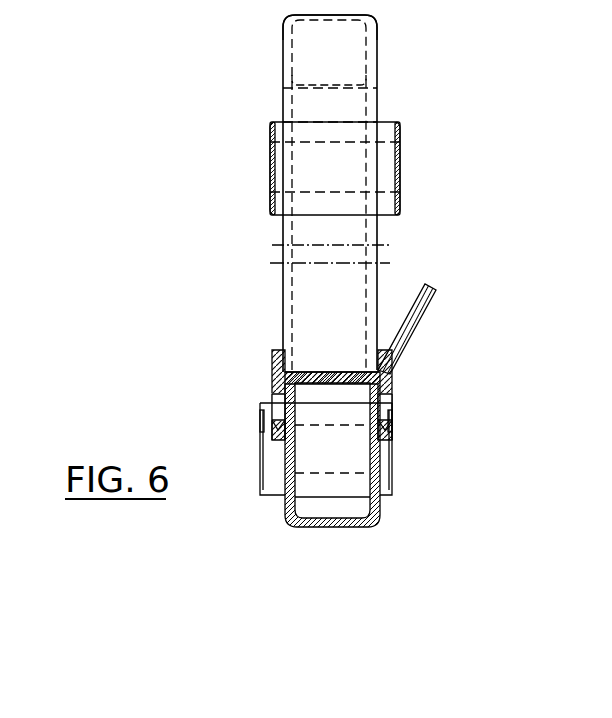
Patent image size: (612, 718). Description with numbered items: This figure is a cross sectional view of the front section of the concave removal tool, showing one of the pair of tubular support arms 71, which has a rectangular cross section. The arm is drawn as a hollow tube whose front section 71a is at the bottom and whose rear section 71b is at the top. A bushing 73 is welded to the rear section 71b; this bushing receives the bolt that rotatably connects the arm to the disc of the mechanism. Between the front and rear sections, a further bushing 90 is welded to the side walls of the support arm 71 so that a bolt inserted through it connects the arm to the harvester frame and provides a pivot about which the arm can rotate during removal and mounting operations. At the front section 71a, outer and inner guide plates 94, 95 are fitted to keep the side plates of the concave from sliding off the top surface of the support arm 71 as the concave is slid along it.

The tubular support arm 71 is at (292, 286).
The front section of the support arm 71a is at (310, 528).
The rear section of the support arm 71b is at (283, 88).
The bushing 73 is at (272, 200).
The bushing 90 is at (273, 495).
The outer guide plate 94 is at (414, 322).
The inner guide plate 95 is at (272, 360).